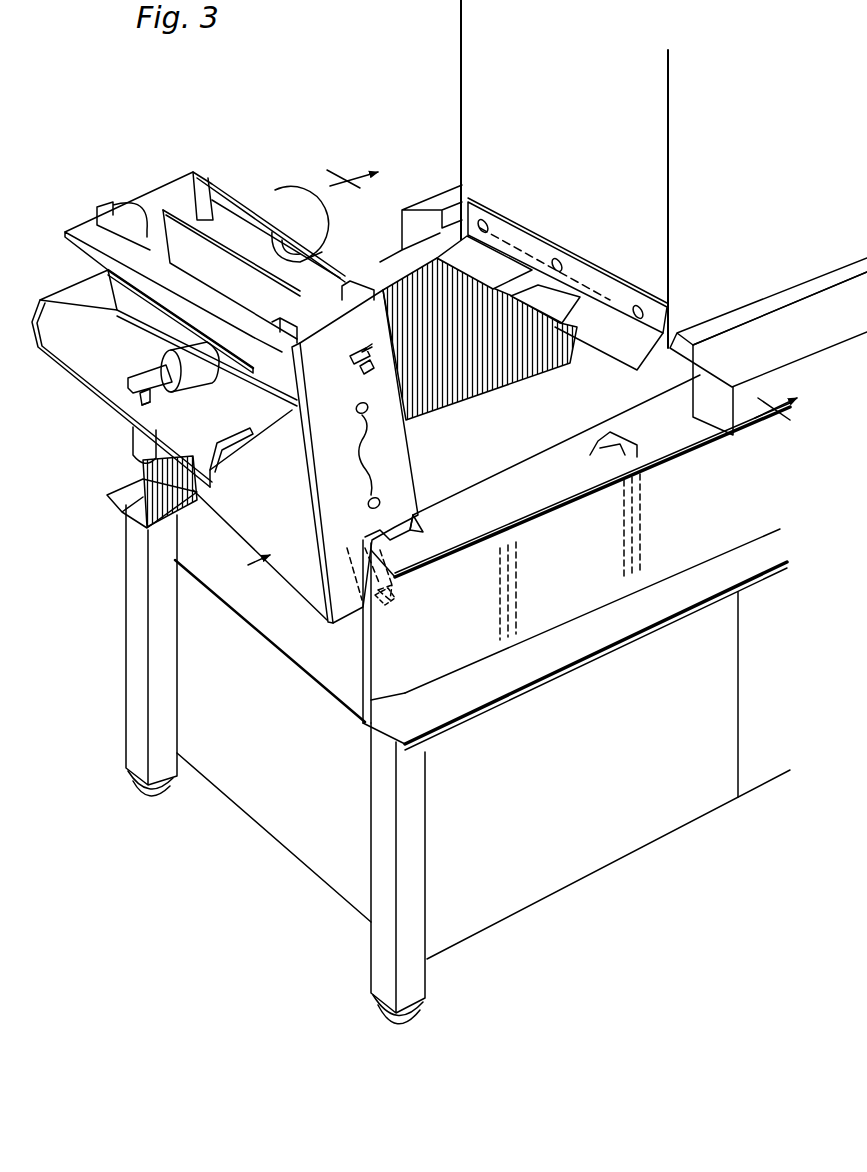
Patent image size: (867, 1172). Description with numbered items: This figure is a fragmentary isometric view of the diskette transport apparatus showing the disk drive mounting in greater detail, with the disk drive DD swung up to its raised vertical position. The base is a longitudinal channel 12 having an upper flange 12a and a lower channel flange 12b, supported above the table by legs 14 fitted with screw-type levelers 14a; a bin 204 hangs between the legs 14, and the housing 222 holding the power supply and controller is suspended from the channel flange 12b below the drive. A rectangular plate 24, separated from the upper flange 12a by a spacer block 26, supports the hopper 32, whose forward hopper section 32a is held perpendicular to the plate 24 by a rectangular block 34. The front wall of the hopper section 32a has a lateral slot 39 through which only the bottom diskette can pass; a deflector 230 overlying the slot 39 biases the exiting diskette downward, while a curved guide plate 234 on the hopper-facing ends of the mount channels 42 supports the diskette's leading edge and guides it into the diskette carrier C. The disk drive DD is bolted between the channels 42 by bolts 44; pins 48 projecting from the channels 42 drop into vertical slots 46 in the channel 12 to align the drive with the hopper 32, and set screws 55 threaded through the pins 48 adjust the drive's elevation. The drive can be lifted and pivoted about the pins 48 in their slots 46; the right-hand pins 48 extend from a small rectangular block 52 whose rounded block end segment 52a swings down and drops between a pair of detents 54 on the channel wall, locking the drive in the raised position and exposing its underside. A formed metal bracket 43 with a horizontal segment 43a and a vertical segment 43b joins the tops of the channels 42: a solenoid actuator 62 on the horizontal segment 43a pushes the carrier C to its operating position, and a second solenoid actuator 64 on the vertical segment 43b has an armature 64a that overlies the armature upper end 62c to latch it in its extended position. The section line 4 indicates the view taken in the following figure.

The frame rail 12 is at (125, 513).
The upper frame rail 12a is at (676, 437).
The lower frame rail 12b is at (513, 683).
The leg 14 is at (126, 680).
The foot 14a is at (143, 795).
The side beam 24 is at (754, 356).
The corner post 26 is at (717, 413).
The pole 32 is at (458, 116).
The pole upper portion 32a is at (460, 74).
The beam flange 34 is at (712, 328).
The bent bracket 39 is at (513, 257).
The channel plate 42 is at (128, 199).
The tray 43 is at (244, 484).
The tray wall 43a is at (110, 299).
The chute 43b is at (92, 370).
The hole pair 44 is at (379, 455).
The notch 46 is at (355, 284).
The bolt 48 is at (348, 358).
The corner bracket 52 is at (375, 552).
The bracket fastener 52a is at (390, 604).
The fastener 54 is at (440, 592).
The nut 55 is at (363, 350).
The roller 62 is at (195, 387).
The roller shaft 62c is at (152, 374).
The pivot shaft 64 is at (136, 454).
The shaft end 64a is at (144, 409).
The front panel 204 is at (753, 760).
The panel bottom edge 222 is at (610, 850).
The mounting plate 230 is at (600, 288).
The cam 234 is at (307, 212).
The cam tab C is at (118, 206).
The direction arrow DD is at (244, 567).
The section line 4- 4 is at (559, 301).